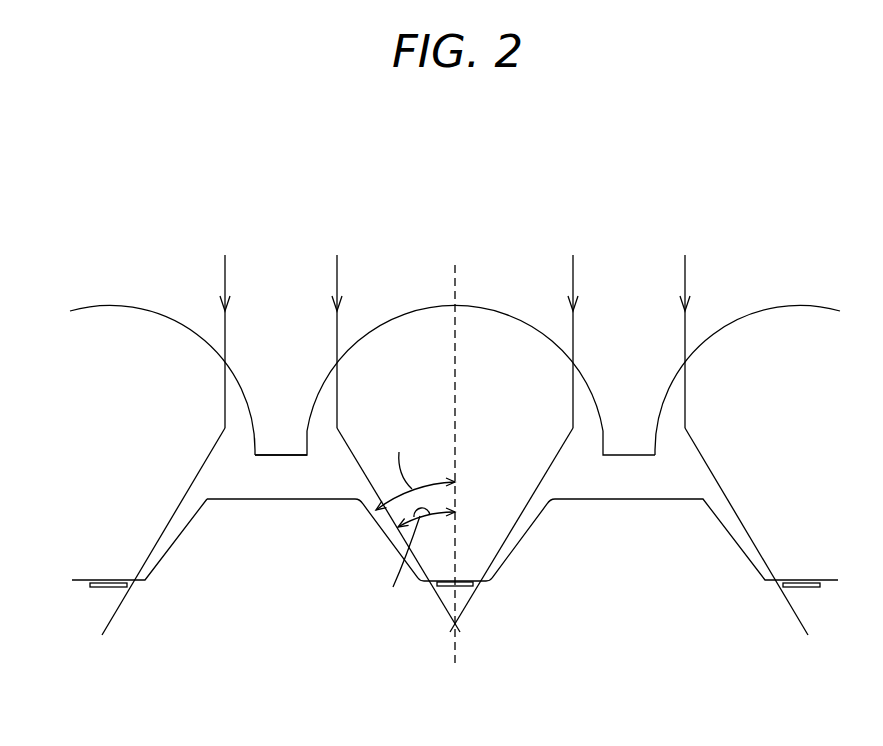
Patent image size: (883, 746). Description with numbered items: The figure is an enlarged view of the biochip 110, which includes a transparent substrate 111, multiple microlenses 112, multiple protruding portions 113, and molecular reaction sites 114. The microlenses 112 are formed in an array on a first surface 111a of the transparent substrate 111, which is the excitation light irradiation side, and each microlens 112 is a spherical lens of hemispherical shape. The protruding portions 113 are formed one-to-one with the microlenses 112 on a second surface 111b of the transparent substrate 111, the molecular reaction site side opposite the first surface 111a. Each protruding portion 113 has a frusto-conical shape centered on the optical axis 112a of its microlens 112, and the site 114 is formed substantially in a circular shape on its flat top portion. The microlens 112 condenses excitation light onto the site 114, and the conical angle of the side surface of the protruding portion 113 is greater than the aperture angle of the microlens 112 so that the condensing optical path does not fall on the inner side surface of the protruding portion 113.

The biochip 110 is at (733, 155).
The transparent substrate 111 is at (252, 507).
The first surface 111a is at (281, 455).
The second surface 111b is at (319, 500).
The microlens 112 is at (502, 311).
The optical axis 112a is at (452, 280).
The protruding portion 113 is at (520, 547).
The site 114 is at (463, 587).